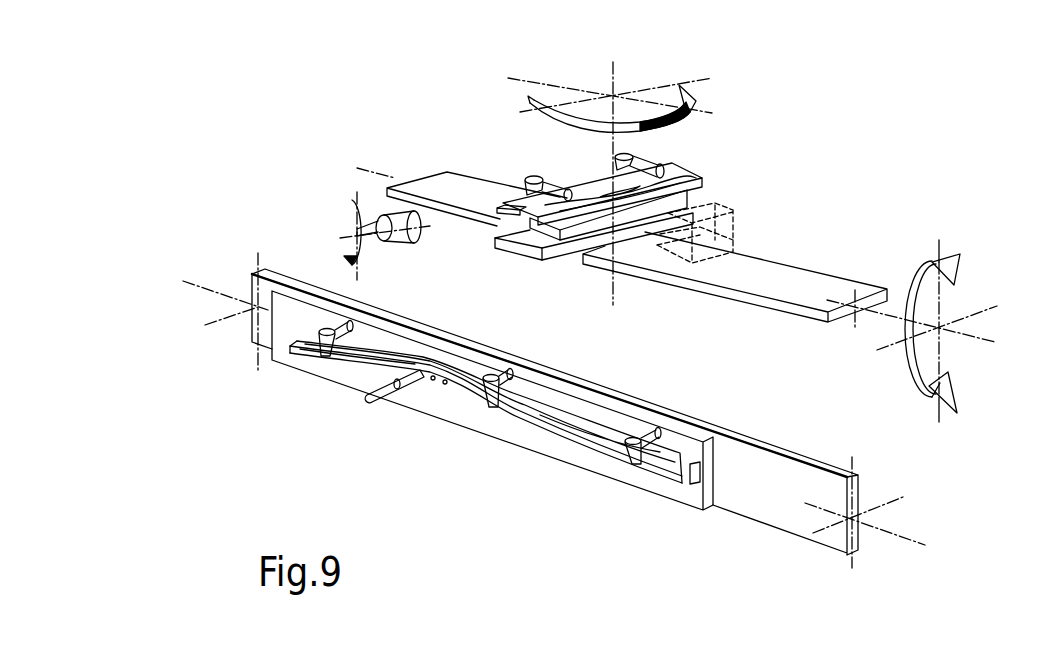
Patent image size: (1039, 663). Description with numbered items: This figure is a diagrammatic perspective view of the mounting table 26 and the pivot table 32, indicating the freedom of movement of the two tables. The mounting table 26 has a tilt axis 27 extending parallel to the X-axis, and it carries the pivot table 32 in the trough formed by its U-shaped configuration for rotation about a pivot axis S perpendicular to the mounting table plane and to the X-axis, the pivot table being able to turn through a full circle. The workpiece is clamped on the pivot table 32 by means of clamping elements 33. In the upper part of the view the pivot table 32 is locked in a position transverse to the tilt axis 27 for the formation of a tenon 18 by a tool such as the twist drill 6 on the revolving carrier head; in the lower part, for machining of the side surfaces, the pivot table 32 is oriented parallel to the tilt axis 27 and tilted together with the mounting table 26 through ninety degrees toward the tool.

The pivot axis S is at (612, 73).
The twist drill 6 is at (398, 386).
The tenon 18 is at (540, 213).
The mounting table 26 is at (784, 272).
The tilt axis 27 is at (993, 340).
The pivot table 32 is at (672, 203).
The clamping elements 33 is at (625, 156).